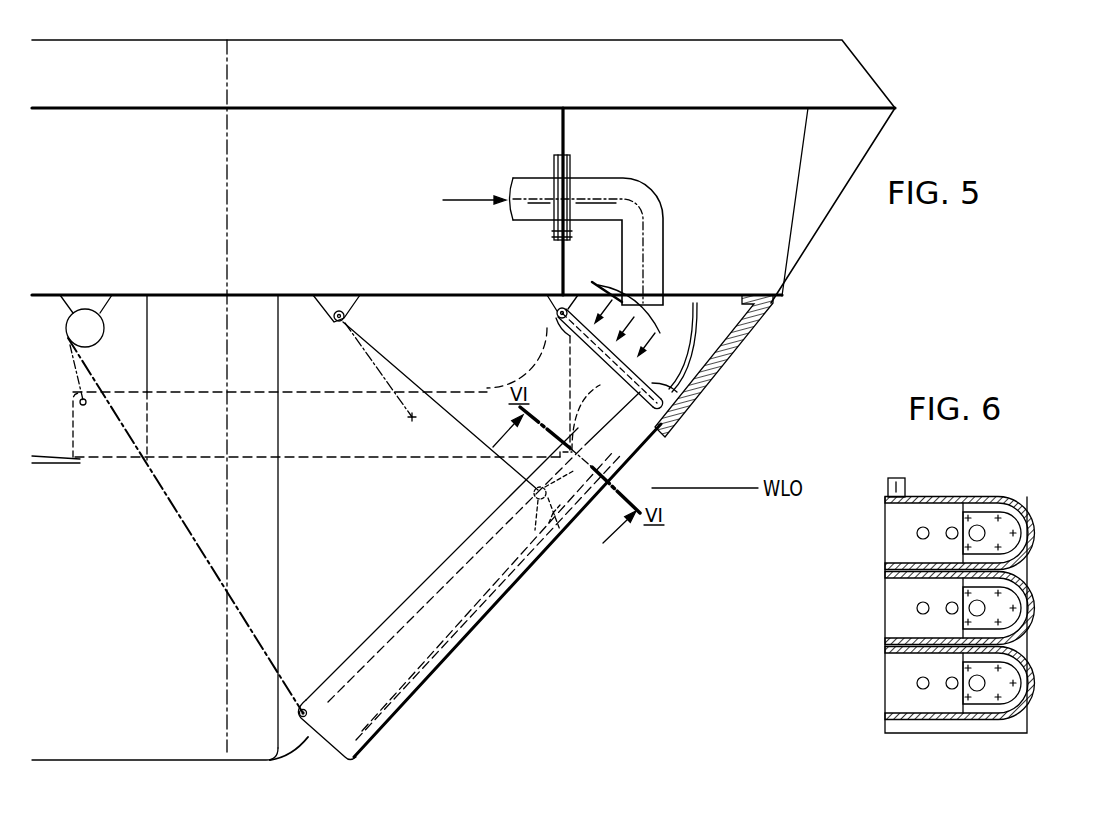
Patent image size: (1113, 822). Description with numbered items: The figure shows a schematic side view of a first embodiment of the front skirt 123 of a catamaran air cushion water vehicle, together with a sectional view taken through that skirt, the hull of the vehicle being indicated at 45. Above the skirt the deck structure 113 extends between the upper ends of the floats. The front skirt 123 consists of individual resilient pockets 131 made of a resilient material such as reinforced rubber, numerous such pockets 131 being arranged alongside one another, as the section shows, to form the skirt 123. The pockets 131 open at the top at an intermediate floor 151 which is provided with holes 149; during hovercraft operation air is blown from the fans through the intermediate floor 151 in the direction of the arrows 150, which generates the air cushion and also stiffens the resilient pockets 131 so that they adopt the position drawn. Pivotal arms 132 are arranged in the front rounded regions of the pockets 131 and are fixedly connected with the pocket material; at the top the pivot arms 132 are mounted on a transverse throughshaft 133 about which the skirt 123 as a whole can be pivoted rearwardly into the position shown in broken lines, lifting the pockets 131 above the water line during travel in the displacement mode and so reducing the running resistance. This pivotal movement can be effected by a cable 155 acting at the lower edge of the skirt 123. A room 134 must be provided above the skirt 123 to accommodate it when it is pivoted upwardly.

In FIG. 5, the vessel hull 45 is at (227, 730).
In FIG. 5, the deck structure 113 is at (361, 208).
In FIG. 5, the front skirt 123 is at (479, 576).
In FIG. 6, the front skirt 123 is at (1045, 620).
In FIG. 5, the resilient pockets 131 is at (498, 563).
In FIG. 6, the resilient pockets 131 is at (958, 497).
In FIG. 5, the pivotal arms 132 is at (555, 543).
In FIG. 6, the pivotal arms 132 is at (1028, 528).
In FIG. 5, the transverse throughshaft 133 is at (556, 313).
In FIG. 6, the transverse throughshaft 133 is at (907, 480).
In FIG. 5, the room 134 is at (299, 318).
In FIG. 5, the holes 149 is at (617, 360).
In FIG. 5, the arrows 150 is at (553, 255).
In FIG. 5, the intermediate floor 151 is at (692, 396).
In FIG. 5, the cable 155 is at (186, 529).